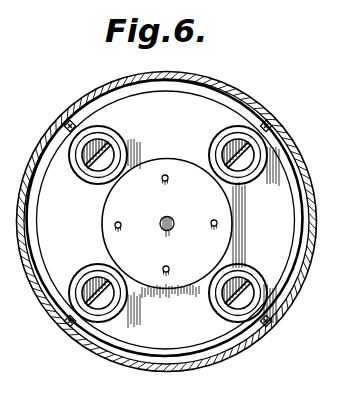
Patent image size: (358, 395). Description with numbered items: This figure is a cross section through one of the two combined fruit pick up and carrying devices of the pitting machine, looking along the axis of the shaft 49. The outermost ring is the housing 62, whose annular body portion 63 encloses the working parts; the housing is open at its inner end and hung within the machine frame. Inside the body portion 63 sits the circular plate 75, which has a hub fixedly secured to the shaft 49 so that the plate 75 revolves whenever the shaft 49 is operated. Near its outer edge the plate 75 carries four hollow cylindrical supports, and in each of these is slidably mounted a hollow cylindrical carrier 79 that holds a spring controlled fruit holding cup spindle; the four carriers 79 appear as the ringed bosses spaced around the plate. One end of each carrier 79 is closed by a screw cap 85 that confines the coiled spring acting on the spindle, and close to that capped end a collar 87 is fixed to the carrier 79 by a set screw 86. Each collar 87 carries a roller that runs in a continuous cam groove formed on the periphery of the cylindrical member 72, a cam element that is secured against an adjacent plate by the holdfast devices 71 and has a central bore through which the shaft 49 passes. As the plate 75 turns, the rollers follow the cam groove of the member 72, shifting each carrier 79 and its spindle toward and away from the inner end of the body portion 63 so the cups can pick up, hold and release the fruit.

The shaft 49 is at (172, 219).
The housing 62 is at (276, 118).
The annular body portion 63 is at (316, 229).
The holdfast devices 71 is at (170, 268).
The cylindrical member 72 is at (190, 233).
The circular plate 75 is at (166, 220).
The hollow cylindrical carrier 79 is at (90, 177).
The screw cap 85 is at (102, 153).
The set screw 86 is at (66, 129).
The collar 87 is at (109, 129).